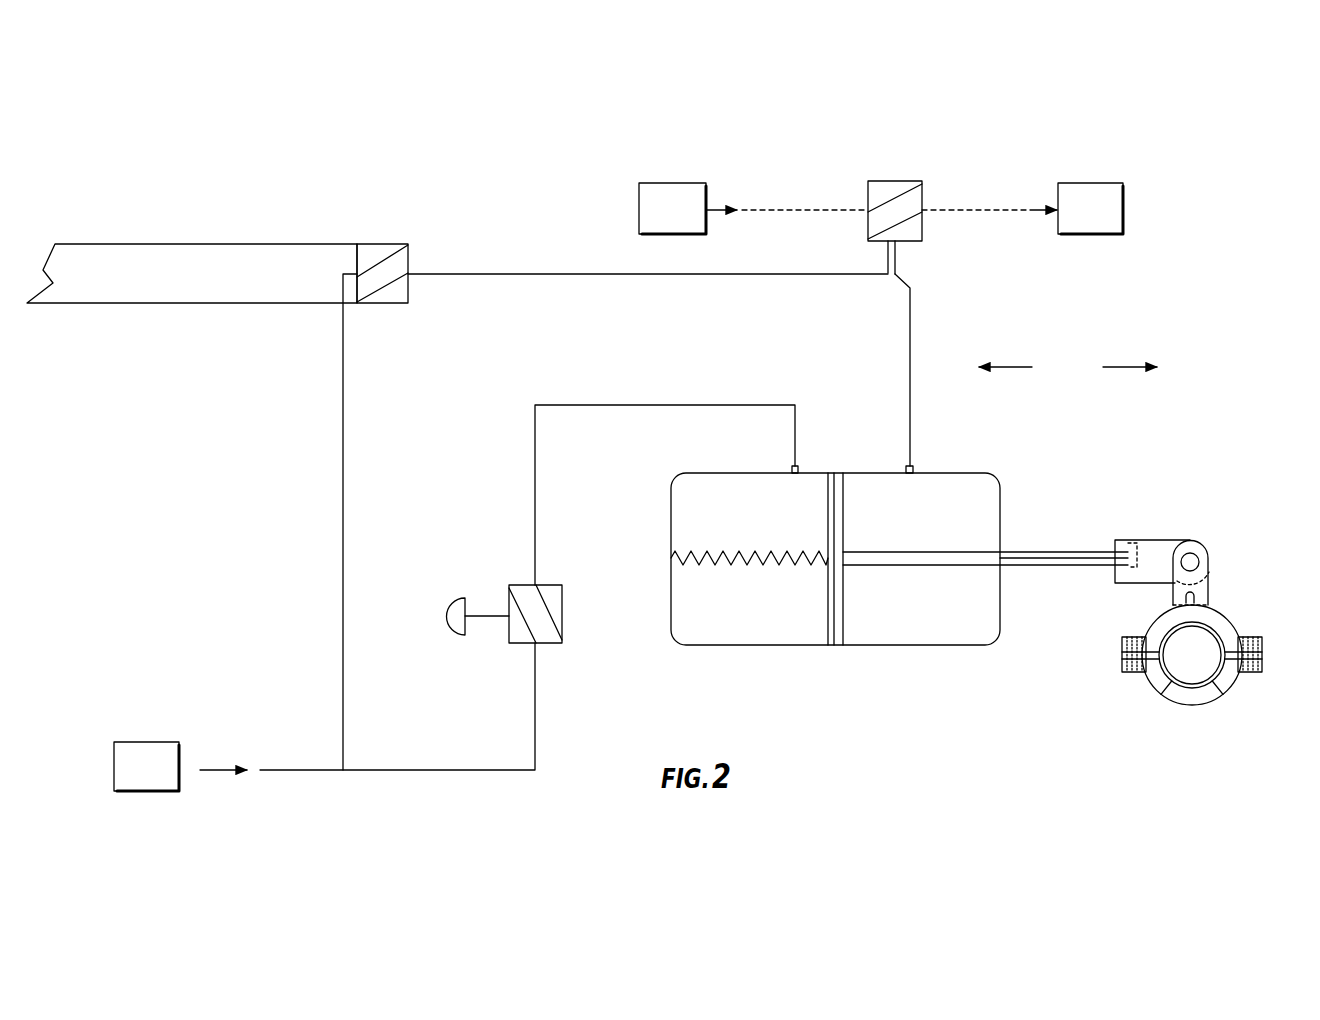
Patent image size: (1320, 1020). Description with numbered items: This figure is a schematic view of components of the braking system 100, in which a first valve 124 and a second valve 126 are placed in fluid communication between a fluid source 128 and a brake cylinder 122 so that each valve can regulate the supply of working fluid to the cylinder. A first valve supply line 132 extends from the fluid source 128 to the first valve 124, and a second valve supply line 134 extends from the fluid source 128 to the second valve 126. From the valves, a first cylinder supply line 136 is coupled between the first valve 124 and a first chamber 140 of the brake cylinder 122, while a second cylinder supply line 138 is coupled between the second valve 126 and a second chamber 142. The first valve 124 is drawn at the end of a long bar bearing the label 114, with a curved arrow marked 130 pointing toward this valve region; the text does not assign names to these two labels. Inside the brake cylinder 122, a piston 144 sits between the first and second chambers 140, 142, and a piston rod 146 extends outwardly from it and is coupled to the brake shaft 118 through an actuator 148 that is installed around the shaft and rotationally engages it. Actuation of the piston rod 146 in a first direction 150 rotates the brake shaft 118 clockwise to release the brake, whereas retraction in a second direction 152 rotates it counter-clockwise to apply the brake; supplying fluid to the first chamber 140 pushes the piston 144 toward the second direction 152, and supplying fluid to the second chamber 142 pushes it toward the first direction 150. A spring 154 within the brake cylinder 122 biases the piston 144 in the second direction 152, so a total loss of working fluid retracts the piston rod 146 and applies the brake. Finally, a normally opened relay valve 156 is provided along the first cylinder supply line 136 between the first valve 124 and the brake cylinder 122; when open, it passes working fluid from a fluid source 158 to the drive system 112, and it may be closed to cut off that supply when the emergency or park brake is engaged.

The system 100 is at (130, 99).
The drive system 112 is at (1076, 224).
The engine 114 is at (155, 270).
The brake shaft 118 is at (1198, 670).
The brake cylinder 122 is at (829, 607).
The first valve 124 is at (390, 296).
The second valve 126 is at (558, 615).
The fluid source 128 is at (132, 782).
The actuator system 130 is at (423, 223).
The first valve supply line 132 is at (343, 508).
The second valve supply line 134 is at (393, 770).
The first cylinder supply line 136 is at (532, 274).
The second cylinder supply line 138 is at (595, 405).
The first chamber 140 is at (896, 524).
The second chamber 142 is at (729, 524).
The piston 144 is at (837, 622).
The piston rod 146 is at (1030, 552).
The actuator 148 is at (1214, 648).
The first direction 150 is at (1120, 367).
The second direction 152 is at (1010, 367).
The spring 154 is at (708, 566).
The relay valve 156 is at (895, 181).
The fluid source 158 is at (658, 224).